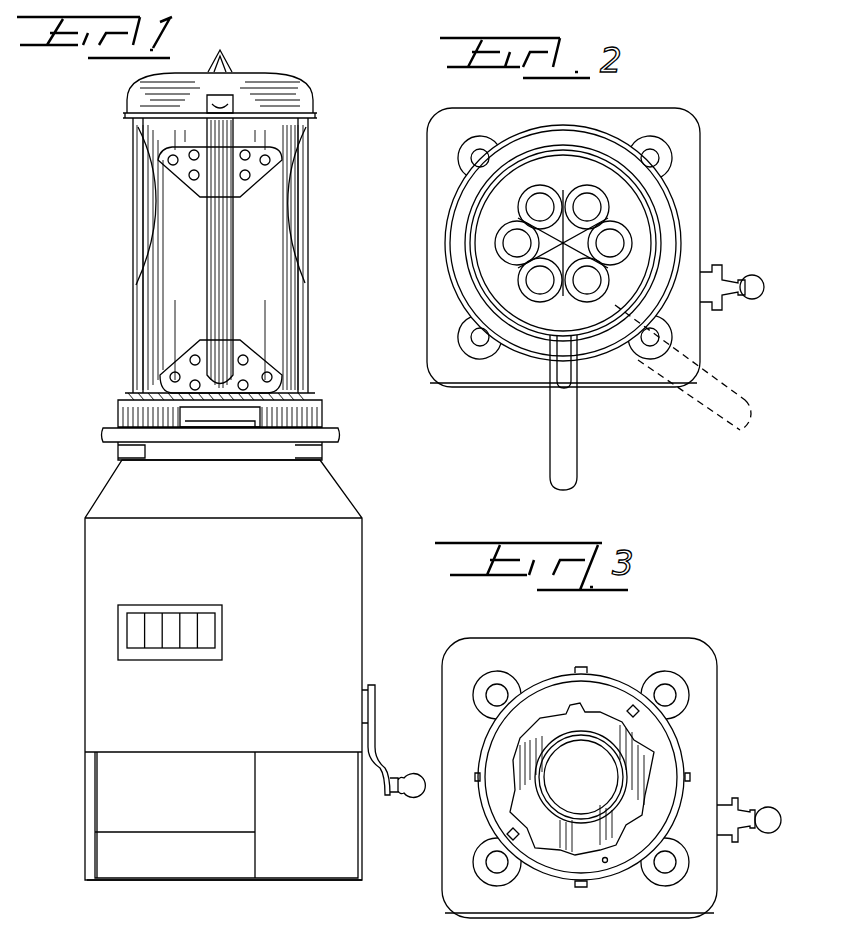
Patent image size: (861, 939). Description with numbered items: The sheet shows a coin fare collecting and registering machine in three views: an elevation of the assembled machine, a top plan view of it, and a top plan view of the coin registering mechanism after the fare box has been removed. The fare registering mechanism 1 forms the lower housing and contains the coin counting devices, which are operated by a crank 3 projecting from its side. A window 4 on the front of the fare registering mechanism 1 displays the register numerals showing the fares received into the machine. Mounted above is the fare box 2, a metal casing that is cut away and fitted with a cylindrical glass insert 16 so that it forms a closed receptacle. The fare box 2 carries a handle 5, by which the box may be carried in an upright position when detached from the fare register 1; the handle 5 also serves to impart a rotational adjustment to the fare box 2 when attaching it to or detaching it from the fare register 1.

In FIG. 1, the fare registering mechanism 1 is at (347, 603).
In FIG. 2, the fare registering mechanism 1 is at (460, 363).
In FIG. 3, the fare registering mechanism 1 is at (700, 727).
In FIG. 1, the fare box 2 is at (298, 340).
In FIG. 1, the crank 3 is at (376, 712).
In FIG. 2, the crank 3 is at (722, 298).
In FIG. 3, the crank 3 is at (733, 807).
In FIG. 1, the window 4 is at (208, 613).
In FIG. 1, the handle 5 is at (227, 300).
In FIG. 2, the handle 5 is at (572, 433).
In FIG. 1, the cylindrical glass insert 16 is at (303, 208).